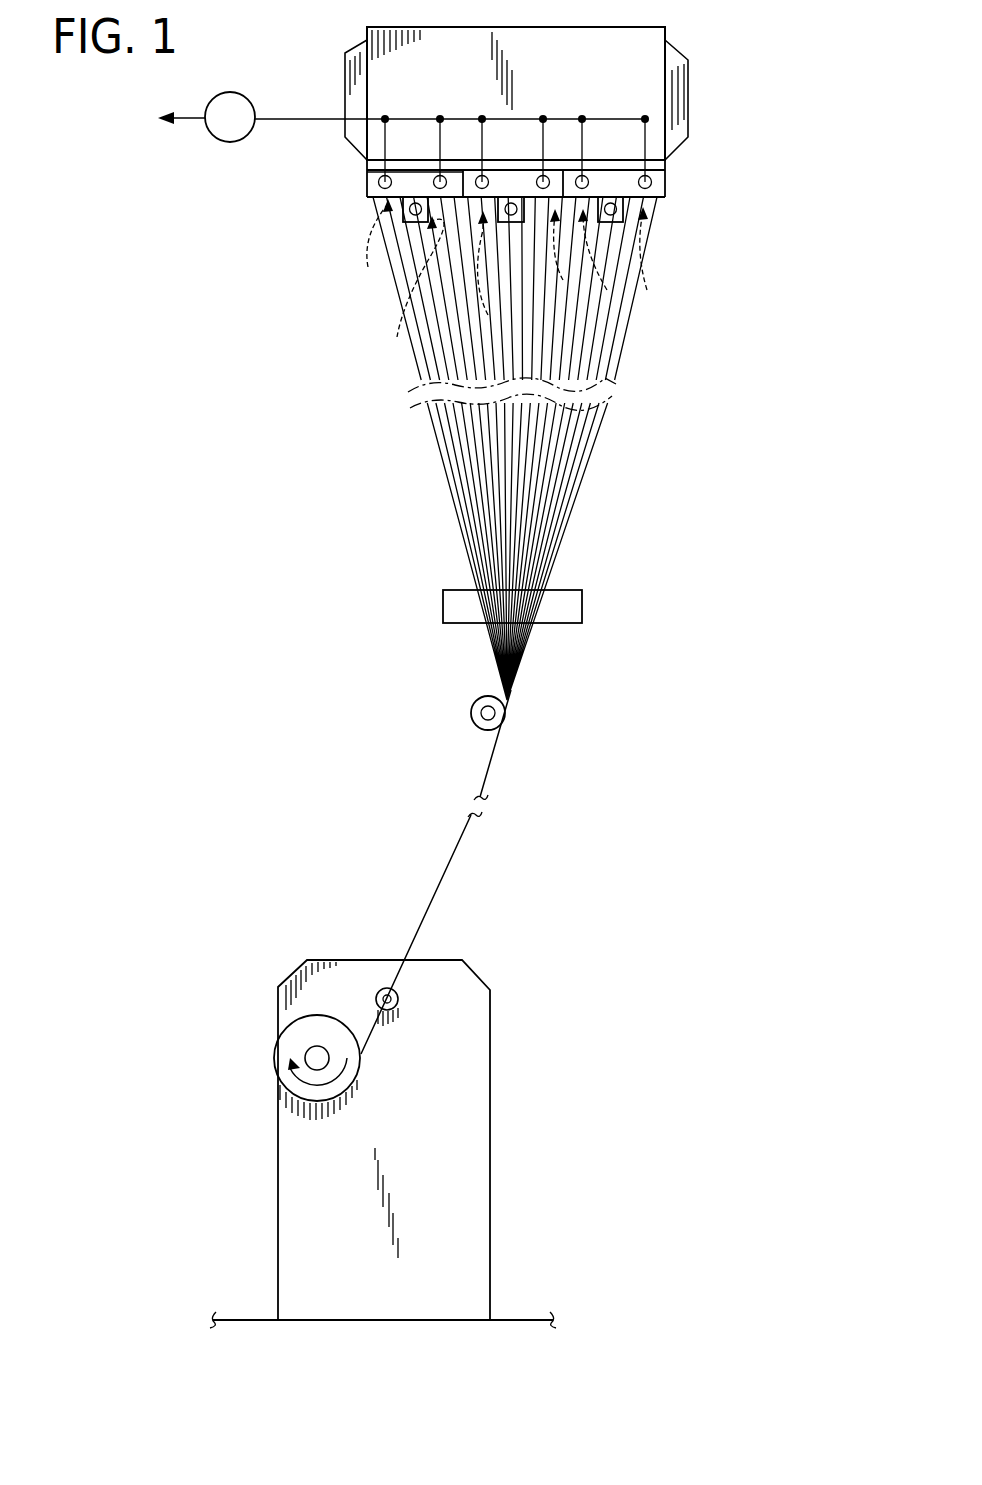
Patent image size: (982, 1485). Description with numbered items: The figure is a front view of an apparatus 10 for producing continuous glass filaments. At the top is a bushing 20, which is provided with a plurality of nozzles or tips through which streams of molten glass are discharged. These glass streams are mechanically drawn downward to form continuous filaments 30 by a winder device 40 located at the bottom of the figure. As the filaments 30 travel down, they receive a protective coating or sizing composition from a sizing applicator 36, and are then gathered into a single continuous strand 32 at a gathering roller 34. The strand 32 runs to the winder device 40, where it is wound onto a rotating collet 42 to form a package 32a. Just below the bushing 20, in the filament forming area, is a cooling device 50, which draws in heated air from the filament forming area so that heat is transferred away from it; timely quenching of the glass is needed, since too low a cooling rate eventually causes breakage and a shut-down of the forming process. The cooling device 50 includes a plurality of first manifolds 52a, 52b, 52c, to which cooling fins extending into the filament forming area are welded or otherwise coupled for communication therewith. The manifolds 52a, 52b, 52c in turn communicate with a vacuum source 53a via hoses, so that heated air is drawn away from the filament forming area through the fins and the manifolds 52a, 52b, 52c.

The apparatus 10 is at (662, 336).
The bushing 20 is at (632, 73).
The continuous filaments 30 is at (565, 508).
The continuous strand 32 is at (443, 887).
The package 32a is at (285, 1045).
The gathering roller 34 is at (482, 713).
The sizing applicator 36 is at (570, 607).
The winder device 40 is at (467, 1013).
The rotating collet 42 is at (313, 1058).
The cooling device 50 is at (704, 176).
The first manifold 52a is at (667, 182).
The first manifold 52b is at (512, 185).
The first manifold 52c is at (363, 177).
The vacuum source 53a is at (212, 130).